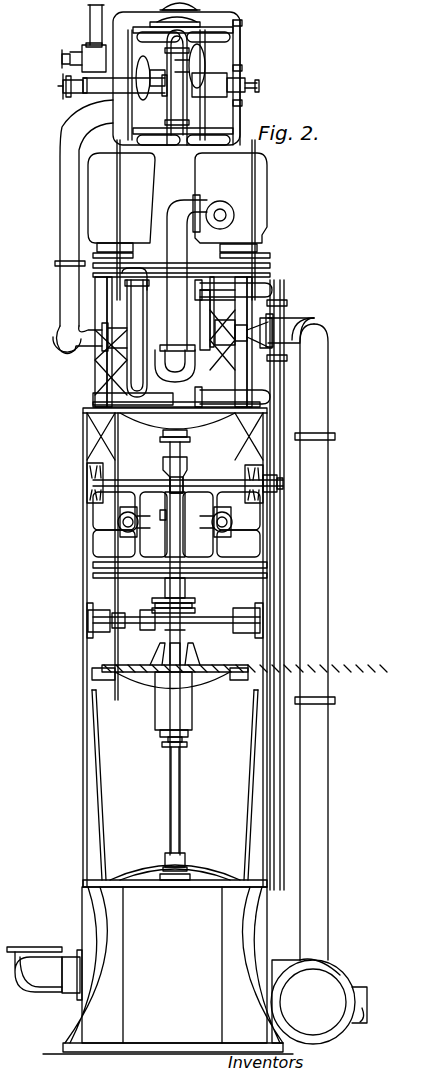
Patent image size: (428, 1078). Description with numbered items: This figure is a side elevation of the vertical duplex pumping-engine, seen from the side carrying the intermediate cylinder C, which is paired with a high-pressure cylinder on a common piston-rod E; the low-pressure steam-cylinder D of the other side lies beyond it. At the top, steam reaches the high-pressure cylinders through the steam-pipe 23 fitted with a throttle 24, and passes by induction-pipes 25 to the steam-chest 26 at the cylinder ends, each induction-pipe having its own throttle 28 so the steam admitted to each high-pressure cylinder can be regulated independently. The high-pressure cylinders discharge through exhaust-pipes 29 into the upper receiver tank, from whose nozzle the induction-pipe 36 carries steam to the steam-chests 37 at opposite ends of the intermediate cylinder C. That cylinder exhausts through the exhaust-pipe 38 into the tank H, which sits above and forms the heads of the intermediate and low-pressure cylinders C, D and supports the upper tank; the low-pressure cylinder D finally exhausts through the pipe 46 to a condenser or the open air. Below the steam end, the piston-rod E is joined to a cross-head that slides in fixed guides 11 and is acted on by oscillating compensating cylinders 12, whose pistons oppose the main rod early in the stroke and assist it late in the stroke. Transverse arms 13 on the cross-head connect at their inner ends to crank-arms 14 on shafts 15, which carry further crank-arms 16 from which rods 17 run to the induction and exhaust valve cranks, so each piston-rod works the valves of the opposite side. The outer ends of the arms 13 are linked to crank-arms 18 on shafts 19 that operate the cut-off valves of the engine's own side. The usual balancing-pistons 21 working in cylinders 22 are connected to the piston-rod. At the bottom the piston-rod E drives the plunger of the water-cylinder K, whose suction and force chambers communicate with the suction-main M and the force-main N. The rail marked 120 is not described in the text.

The fixed guides 11 is at (184, 540).
The oscillating compensating cylinders 12 is at (108, 530).
The transverse arms 13 is at (243, 530).
The crank-arms 14 is at (150, 634).
The shafts 15 is at (216, 617).
The crank-arms 16 is at (128, 617).
The rods 17 is at (121, 462).
The crank-arms 18 is at (182, 493).
The shafts 19 is at (221, 486).
The balancing-pistons 21 is at (165, 595).
The cylinders 22 is at (173, 709).
The steam-pipe 23 is at (90, 12).
The throttle 24 is at (82, 58).
The induction-pipes 25 is at (168, 98).
The steam-chest 26 is at (183, 33).
The throttle 28 is at (78, 95).
The exhaust-pipes 29 is at (144, 74).
The induction-pipe 36 is at (62, 152).
The steam-chests 37 is at (203, 298).
The exhaust-pipe 38 is at (228, 220).
The exhaust pipe 46 is at (302, 320).
The rail 120 is at (280, 585).
The intermediate cylinder C is at (232, 333).
The low-pressure steam-cylinder D is at (97, 299).
The piston-rod E is at (180, 790).
The tank H is at (177, 207).
The water-cylinder K is at (168, 970).
The suction-main M is at (44, 973).
The force-main N is at (319, 1001).